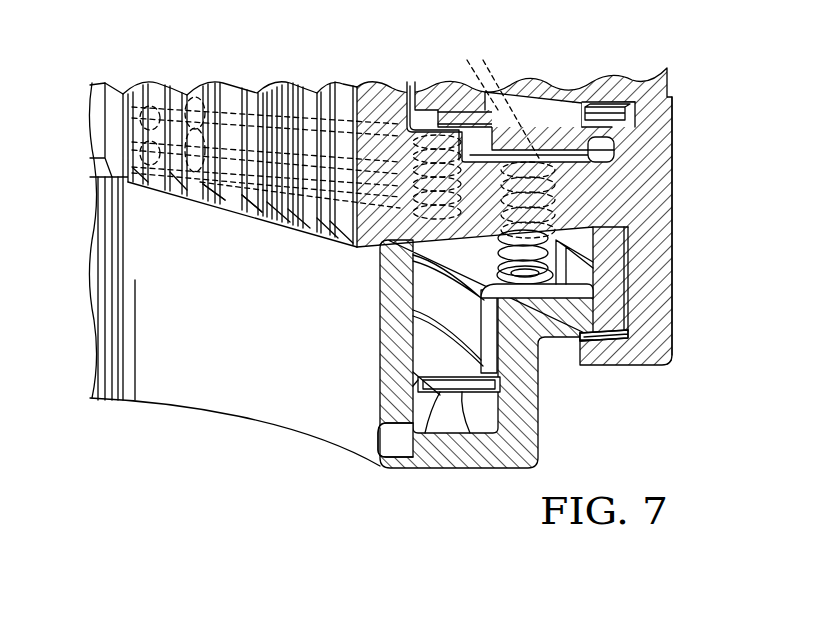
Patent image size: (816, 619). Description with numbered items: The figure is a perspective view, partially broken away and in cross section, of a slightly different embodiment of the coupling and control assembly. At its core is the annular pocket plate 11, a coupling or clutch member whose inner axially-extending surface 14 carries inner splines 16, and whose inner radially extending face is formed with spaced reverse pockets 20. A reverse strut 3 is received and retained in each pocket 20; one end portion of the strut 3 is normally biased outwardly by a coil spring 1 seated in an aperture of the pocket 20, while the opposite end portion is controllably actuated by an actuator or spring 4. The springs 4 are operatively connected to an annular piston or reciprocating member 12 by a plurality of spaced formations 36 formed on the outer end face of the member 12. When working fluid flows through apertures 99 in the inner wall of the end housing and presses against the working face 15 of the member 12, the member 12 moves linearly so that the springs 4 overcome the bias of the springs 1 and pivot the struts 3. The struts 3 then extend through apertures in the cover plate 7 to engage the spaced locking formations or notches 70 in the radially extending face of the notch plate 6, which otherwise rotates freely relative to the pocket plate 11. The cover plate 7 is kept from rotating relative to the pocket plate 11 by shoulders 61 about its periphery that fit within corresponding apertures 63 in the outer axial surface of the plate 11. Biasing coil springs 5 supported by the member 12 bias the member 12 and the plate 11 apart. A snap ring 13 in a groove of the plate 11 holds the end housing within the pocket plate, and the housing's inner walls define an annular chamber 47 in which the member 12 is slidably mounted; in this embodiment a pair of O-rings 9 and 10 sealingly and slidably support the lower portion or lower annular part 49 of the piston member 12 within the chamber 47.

The coil spring 1 is at (350, 80).
The reverse strut 3 is at (560, 135).
The actuator spring 4 is at (432, 100).
The biasing coil spring 5 is at (165, 100).
The notch plate 6 is at (676, 82).
The cover plate 7 is at (620, 118).
The O-ring 9 is at (380, 424).
The O-ring 10 is at (505, 390).
The pocket plate 11 is at (676, 293).
The reciprocating member 12 is at (588, 340).
The snap ring 13 is at (614, 338).
The inner axially-extending surface 14 is at (230, 100).
The working face 15 is at (430, 396).
The inner splines 16 is at (250, 210).
The reverse pocket 20 is at (612, 142).
The formation 36 is at (497, 287).
The annular chamber 47 is at (485, 410).
The lower annular part 49 is at (457, 392).
The shoulder 61 is at (429, 108).
The aperture 63 is at (412, 86).
The locking formation 70 is at (520, 92).
The aperture 99 is at (397, 437).